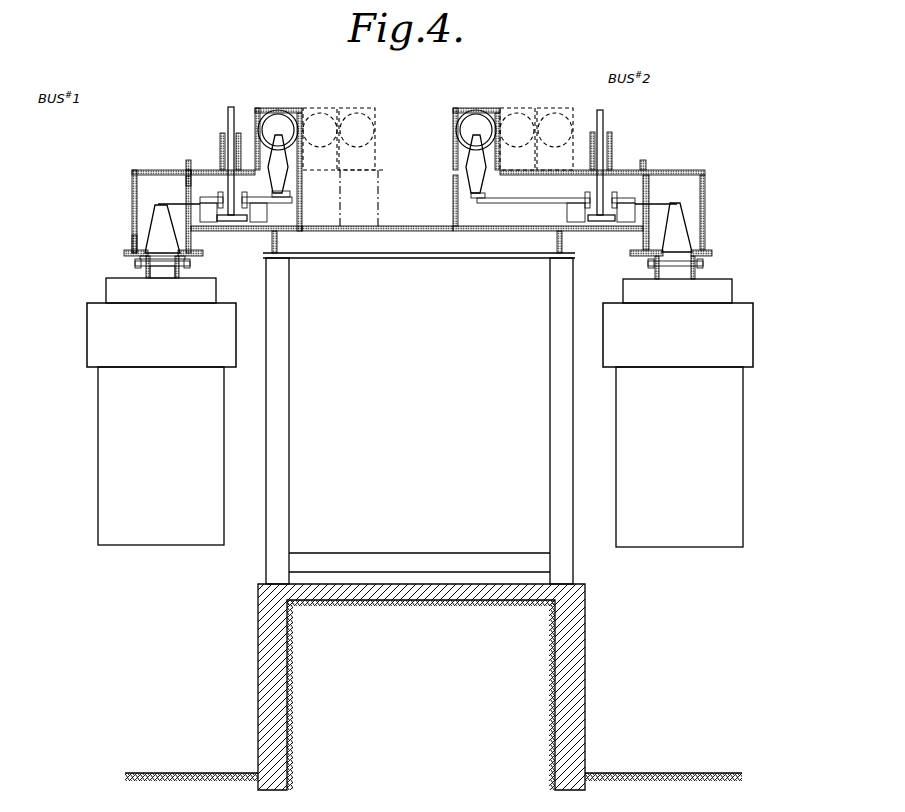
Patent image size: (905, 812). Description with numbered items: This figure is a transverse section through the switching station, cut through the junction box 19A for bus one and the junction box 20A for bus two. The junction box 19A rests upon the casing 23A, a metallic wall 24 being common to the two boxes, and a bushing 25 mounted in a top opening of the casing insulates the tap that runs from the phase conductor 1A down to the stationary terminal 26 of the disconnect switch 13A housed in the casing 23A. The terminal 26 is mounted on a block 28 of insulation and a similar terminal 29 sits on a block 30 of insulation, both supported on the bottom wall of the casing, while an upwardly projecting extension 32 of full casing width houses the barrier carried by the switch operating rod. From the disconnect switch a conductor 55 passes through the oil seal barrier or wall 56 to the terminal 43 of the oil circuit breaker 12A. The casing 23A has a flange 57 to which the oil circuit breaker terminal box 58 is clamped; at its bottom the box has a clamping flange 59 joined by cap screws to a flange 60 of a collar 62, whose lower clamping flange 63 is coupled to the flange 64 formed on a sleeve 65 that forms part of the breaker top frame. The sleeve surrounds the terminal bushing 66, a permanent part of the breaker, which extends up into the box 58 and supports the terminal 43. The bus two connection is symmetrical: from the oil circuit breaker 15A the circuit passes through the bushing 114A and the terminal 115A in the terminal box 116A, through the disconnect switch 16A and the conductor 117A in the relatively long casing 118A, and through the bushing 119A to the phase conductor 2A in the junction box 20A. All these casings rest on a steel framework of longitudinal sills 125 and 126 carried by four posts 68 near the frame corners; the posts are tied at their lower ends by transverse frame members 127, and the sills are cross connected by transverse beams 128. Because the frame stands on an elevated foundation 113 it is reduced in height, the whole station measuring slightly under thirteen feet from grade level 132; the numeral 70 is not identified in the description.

The phase conductor of bus 1 1A is at (280, 127).
The phase conductor of bus 2 2A is at (478, 127).
The oil circuit breaker 12A is at (82, 298).
The disconnect switch 13A is at (218, 172).
The oil circuit breaker 15A is at (746, 286).
The disconnect switch 16A is at (620, 151).
The junction box 19A is at (260, 110).
The junction box 20A is at (458, 110).
The casing 23A is at (318, 230).
The metallic wall 24 is at (290, 175).
The bushing 25 is at (283, 160).
The stationary terminal 26 is at (253, 200).
The block of insulation 28 is at (252, 229).
The terminal 29 is at (215, 199).
The block of insulation 30 is at (217, 223).
The upwardly projecting extension 32 is at (227, 130).
The terminal 43 is at (156, 203).
The conductor 55 is at (170, 203).
The oil seal barrier or wall 56 is at (188, 178).
The flange 57 is at (191, 162).
The oil circuit breaker terminal box 58 is at (132, 183).
The clamping flange 59 is at (132, 246).
The flange 60 is at (130, 252).
The collar 62 is at (140, 258).
The clamping flange 63 is at (135, 264).
The flange 64 is at (146, 270).
The sleeve 65 is at (142, 278).
The terminal bushing 66 is at (167, 278).
The vertical frame members or posts 68 is at (282, 441).
The transformer tank 70 is at (108, 472).
The elevated foundation 113 is at (580, 691).
The bushing 114A is at (680, 236).
The terminal 115A is at (680, 203).
The terminal box 116A is at (683, 172).
The conductor 117A is at (528, 204).
The casing 118A is at (473, 231).
The bushing 119A is at (478, 160).
The longitudinal sill 125 is at (278, 250).
The longitudinal sill 126 is at (563, 247).
The transverse frame members 127 is at (445, 552).
The transverse beam 128 is at (403, 237).
The grade level 132 is at (687, 772).